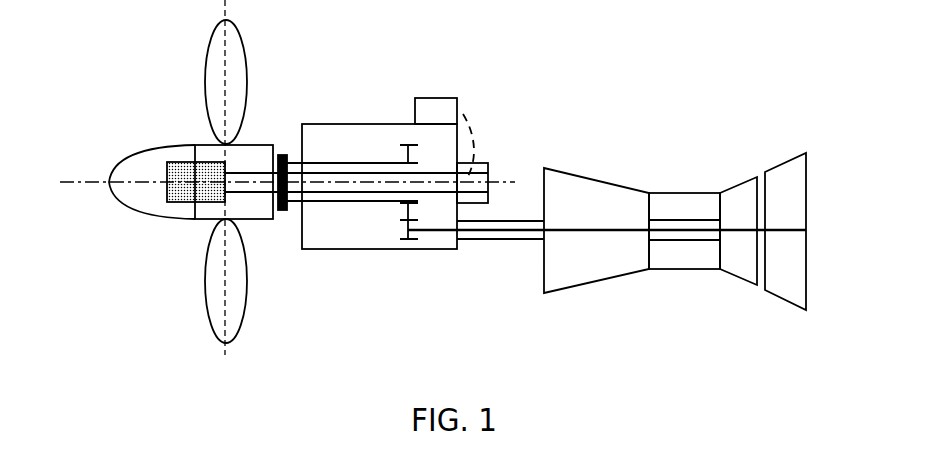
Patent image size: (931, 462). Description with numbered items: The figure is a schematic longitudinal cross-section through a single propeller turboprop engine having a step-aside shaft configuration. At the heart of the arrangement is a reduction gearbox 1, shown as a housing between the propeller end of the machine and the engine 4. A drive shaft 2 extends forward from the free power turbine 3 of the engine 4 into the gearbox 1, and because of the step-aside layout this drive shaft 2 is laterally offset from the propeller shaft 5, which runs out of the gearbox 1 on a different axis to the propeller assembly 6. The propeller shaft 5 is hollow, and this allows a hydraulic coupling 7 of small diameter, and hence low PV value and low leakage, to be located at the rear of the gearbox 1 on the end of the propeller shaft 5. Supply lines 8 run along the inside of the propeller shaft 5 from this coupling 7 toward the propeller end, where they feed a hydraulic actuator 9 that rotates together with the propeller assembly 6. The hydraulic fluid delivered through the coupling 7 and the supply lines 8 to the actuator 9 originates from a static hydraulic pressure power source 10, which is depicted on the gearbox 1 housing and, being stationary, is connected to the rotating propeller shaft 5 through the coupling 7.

The gearbox 1 is at (375, 105).
The drive shaft 2 is at (500, 234).
The free power turbine 3 is at (787, 302).
The engine 4 is at (683, 180).
The propeller shaft 5 is at (340, 162).
The propeller assembly 6 is at (175, 128).
The hydraulic coupling 7 is at (489, 163).
The supply lines 8 is at (375, 184).
The hydraulic actuator 9 is at (187, 205).
The static hydraulic pressure power source 10 is at (437, 98).